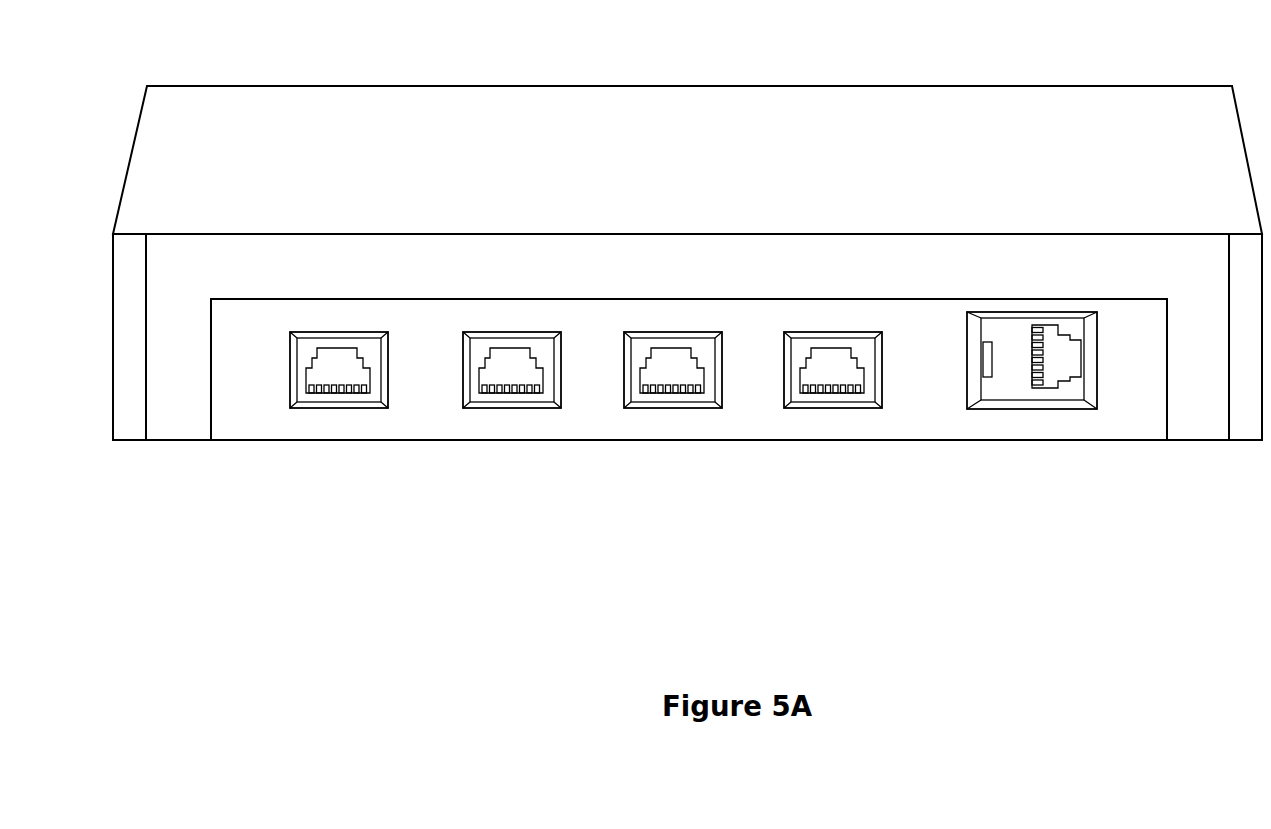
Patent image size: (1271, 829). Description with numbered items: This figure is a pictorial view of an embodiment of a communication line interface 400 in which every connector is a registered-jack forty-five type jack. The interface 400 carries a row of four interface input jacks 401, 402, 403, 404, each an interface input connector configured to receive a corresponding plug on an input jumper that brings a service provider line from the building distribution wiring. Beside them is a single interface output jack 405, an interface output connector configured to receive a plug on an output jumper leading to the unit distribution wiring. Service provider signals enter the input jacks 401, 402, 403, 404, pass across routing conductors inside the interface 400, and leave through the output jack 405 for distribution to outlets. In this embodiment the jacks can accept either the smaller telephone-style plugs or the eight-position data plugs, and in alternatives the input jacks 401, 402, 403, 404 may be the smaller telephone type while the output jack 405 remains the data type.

The communication line interface 400 is at (1033, 86).
The interface input jack 401 is at (338, 430).
The interface input jack 402 is at (505, 432).
The interface input jack 403 is at (672, 432).
The interface input jack 404 is at (823, 432).
The interface output jack 405 is at (1033, 432).